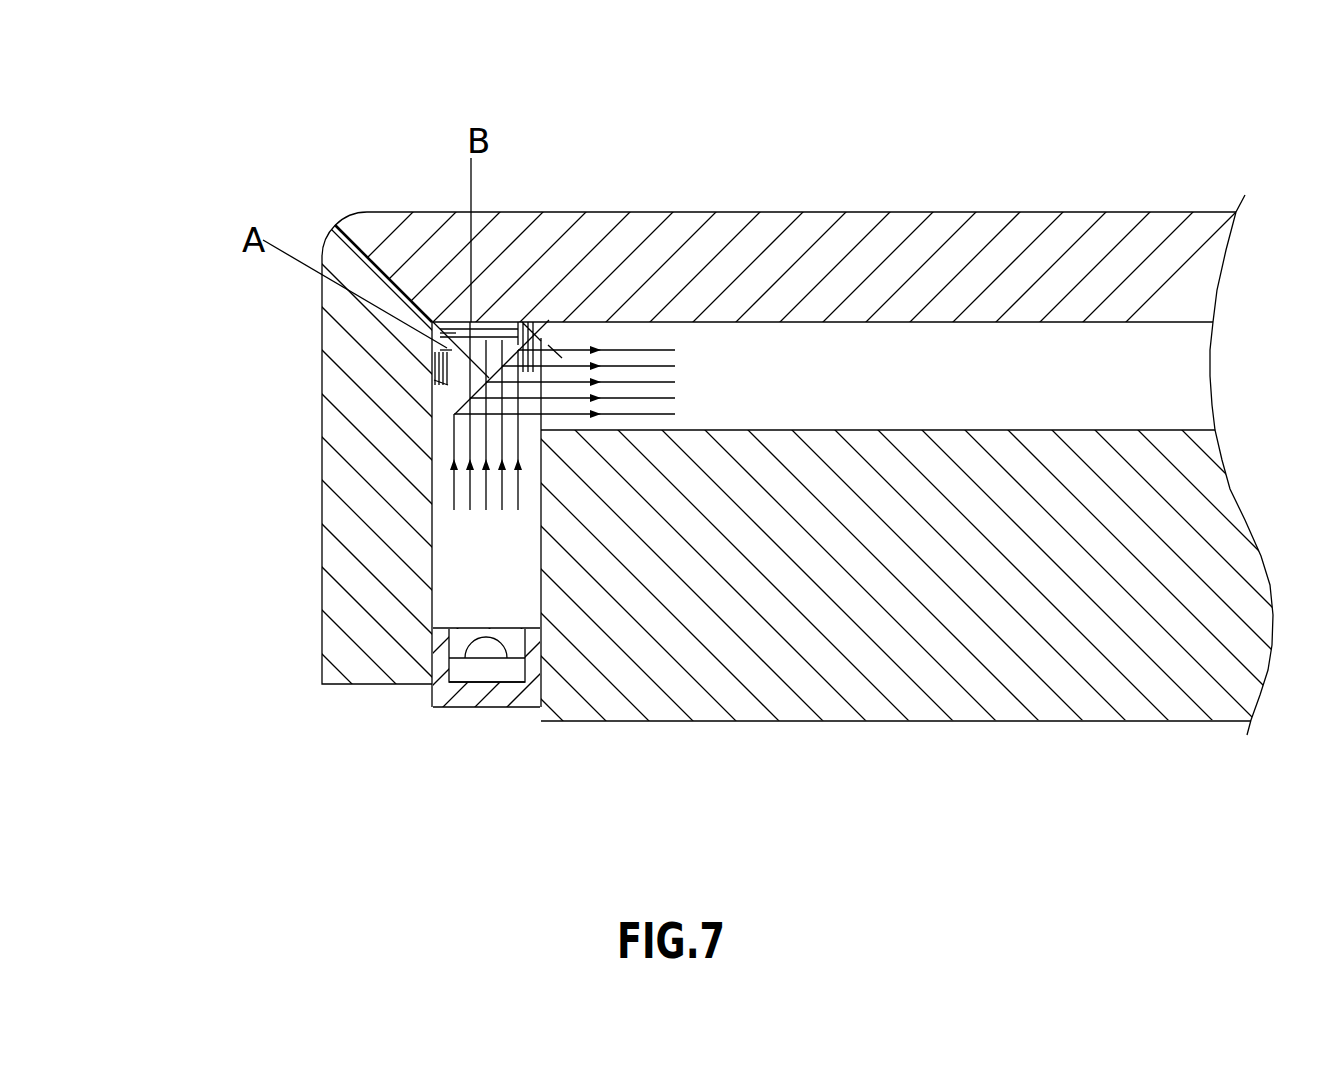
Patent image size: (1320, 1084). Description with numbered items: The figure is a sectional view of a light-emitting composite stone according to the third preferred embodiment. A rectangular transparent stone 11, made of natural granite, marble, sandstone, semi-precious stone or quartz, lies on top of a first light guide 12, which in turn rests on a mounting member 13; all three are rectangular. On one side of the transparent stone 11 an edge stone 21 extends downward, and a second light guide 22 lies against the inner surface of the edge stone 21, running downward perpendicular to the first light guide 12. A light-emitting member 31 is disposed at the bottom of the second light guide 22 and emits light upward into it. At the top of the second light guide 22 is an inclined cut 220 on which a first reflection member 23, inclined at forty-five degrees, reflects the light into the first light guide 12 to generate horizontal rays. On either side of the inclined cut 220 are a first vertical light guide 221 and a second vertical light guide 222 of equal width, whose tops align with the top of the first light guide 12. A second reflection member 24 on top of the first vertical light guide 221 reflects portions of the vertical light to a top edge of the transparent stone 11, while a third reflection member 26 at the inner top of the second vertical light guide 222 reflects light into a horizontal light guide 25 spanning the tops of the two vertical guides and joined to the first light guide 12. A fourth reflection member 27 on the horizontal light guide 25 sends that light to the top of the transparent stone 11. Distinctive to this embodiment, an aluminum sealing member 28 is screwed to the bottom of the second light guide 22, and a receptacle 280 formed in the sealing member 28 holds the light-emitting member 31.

The transparent stone 11 is at (897, 275).
The first light guide 12 is at (1047, 382).
The mounting member 13 is at (1062, 610).
The edge stone 21 is at (385, 478).
The second light guide 22 is at (468, 577).
The first reflection member 23 is at (445, 335).
The second reflection member 24 is at (436, 338).
The horizontal light guide 25 is at (494, 328).
The third reflection member 26 is at (530, 330).
The fourth reflection member 27 is at (450, 330).
The sealing member 28 is at (463, 702).
The light-emitting member 31 is at (455, 672).
The receptacle 280 is at (512, 683).
The inclined cut 220 is at (447, 350).
The first vertical light guide 221 is at (443, 385).
The second vertical light guide 222 is at (555, 353).